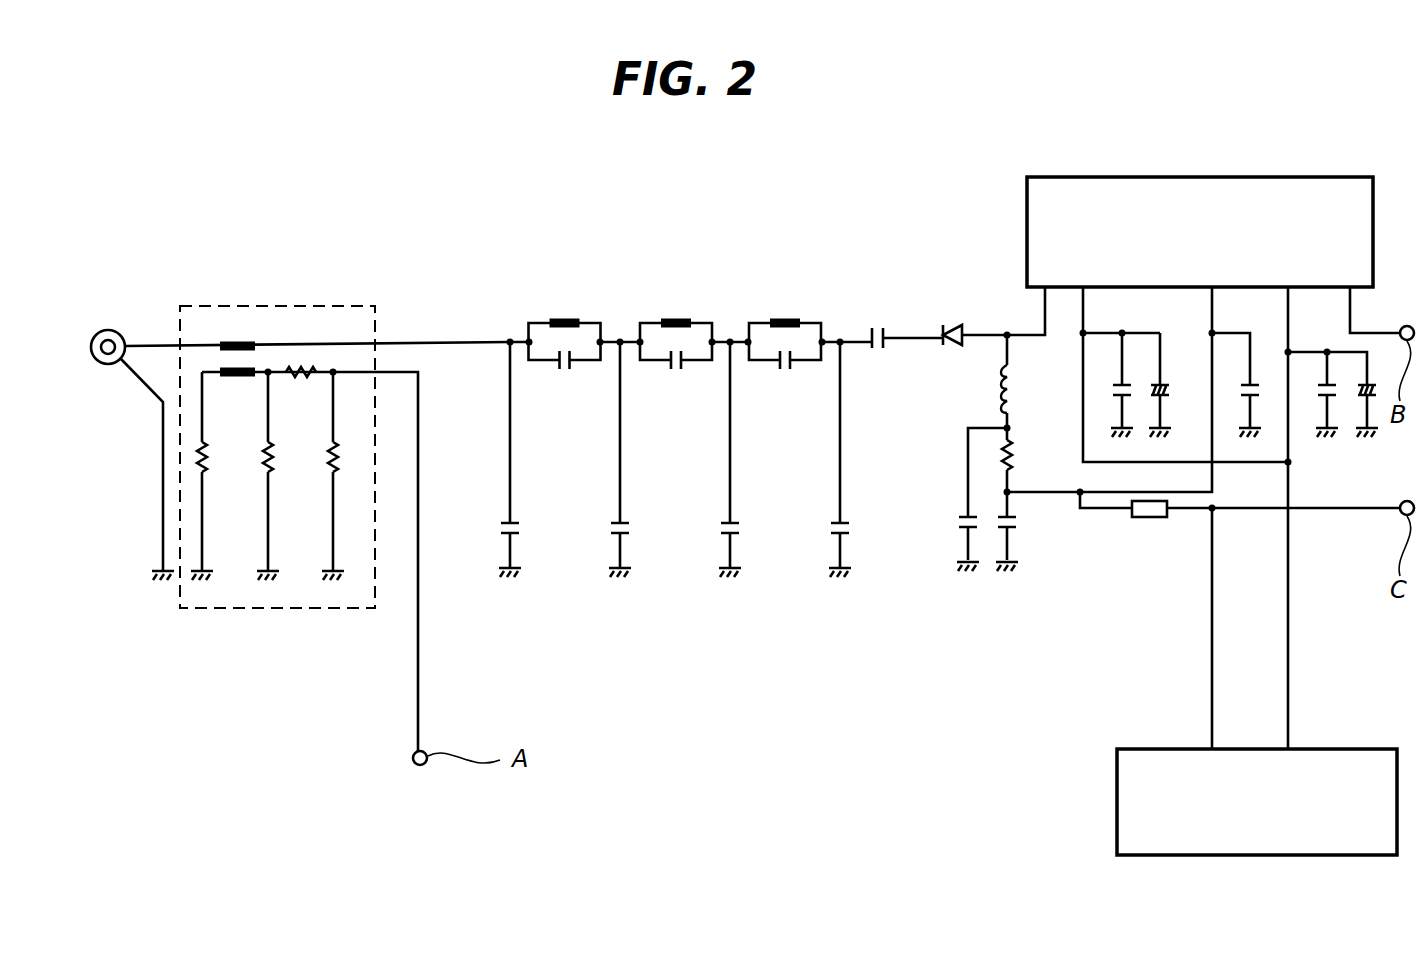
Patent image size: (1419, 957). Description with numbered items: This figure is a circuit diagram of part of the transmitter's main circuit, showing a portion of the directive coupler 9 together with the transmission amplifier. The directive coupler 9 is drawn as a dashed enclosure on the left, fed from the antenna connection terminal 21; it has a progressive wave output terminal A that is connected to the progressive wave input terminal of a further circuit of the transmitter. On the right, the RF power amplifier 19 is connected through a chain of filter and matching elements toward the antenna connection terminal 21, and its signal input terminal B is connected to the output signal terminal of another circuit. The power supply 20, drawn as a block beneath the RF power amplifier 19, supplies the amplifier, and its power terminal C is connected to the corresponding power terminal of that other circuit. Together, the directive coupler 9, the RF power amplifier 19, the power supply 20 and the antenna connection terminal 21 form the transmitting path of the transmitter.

The directive coupler 9 is at (310, 302).
The RF power amplifier 19 is at (1192, 177).
The power supply 20 is at (1117, 802).
The antenna connection terminal 21 is at (109, 330).